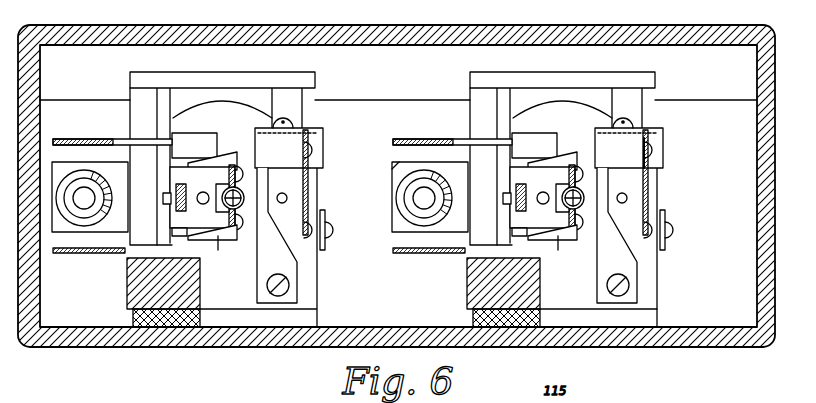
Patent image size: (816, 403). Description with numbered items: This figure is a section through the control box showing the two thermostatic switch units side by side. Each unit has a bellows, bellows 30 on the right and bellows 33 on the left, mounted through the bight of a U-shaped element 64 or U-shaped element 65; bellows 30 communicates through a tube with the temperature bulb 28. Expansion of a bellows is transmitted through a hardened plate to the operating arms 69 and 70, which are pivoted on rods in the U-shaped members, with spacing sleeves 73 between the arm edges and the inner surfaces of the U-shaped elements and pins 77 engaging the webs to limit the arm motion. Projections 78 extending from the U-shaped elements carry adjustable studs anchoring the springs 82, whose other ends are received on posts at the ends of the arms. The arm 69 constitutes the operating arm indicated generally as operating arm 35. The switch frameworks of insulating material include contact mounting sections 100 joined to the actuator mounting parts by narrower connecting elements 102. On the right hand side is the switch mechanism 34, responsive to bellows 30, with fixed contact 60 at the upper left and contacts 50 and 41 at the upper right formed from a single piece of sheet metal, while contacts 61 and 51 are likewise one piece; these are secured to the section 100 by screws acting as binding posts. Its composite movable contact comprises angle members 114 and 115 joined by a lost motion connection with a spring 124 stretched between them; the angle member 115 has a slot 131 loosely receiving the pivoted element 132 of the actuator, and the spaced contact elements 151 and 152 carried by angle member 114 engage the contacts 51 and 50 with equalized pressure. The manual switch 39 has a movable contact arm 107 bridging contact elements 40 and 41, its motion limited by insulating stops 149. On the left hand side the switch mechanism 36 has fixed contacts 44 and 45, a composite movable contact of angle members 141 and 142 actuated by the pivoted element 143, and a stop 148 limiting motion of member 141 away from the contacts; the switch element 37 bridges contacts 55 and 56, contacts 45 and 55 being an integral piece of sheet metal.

The pin 77 is at (163, 88).
The bellows 33 is at (204, 108).
The U-shaped element 65 is at (285, 77).
The spacing sleeve 73 is at (292, 100).
The operating arm 70 is at (65, 139).
The bulb 28 is at (102, 136).
The composite switch mechanism 36 is at (232, 150).
The fixed contact 45 is at (266, 137).
The contact 55 is at (324, 155).
The stop 148 is at (166, 195).
The pivoted element 143 is at (199, 193).
The switch element 37 is at (317, 197).
The contact 56 is at (327, 229).
The angle member 142 is at (203, 232).
The angle member 141 is at (218, 250).
The fixed contact 44 is at (252, 245).
The spring 82 is at (98, 224).
The connecting element 102 is at (128, 292).
The bellows 30 is at (562, 84).
The U-shaped element 64 is at (584, 189).
The operating arm 69 is at (429, 194).
The operating arm 35 is at (452, 129).
The fixed contact 60 is at (541, 132).
The fixed contact 50 is at (608, 131).
The contact element 41 is at (646, 148).
The switch mechanism 34 is at (555, 152).
The projection 78 is at (384, 160).
The contact element 151 is at (599, 188).
The movable contact arm 107 is at (678, 155).
The angle member 115 is at (523, 197).
The pivoted element 132 is at (543, 186).
The spring 124 is at (598, 191).
The manual switch 39 is at (675, 184).
The stop 149 is at (663, 197).
The slot 131 is at (534, 203).
The contact element 40 is at (683, 228).
The fixed contact 61 is at (551, 240).
The contact element 152 is at (617, 235).
The angle member 114 is at (563, 259).
The contact mounting section 100 is at (682, 247).
The fixed contact 51 is at (598, 278).